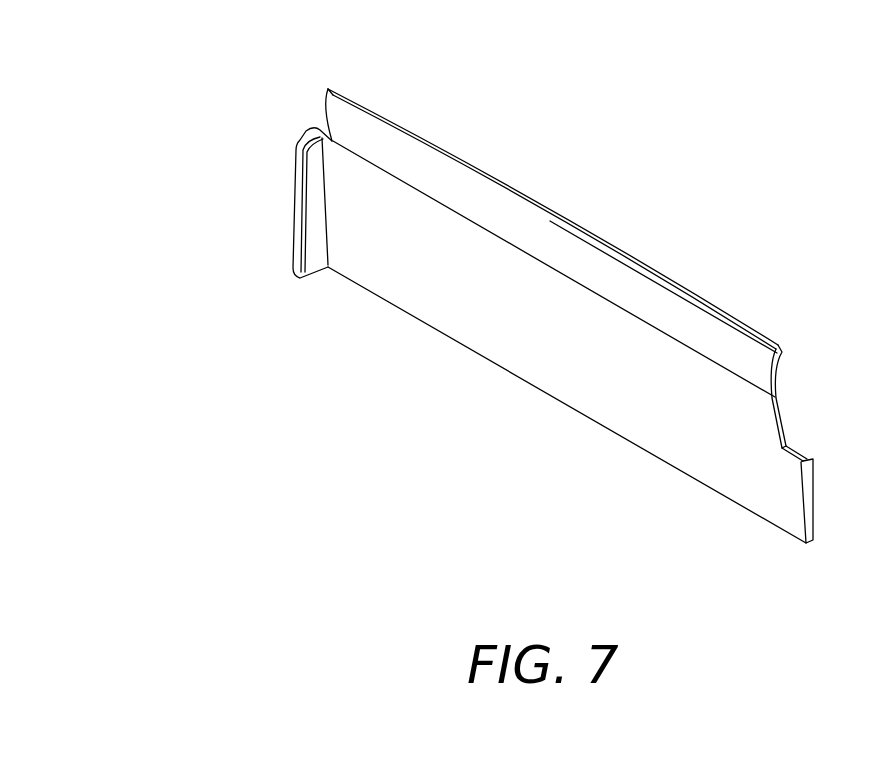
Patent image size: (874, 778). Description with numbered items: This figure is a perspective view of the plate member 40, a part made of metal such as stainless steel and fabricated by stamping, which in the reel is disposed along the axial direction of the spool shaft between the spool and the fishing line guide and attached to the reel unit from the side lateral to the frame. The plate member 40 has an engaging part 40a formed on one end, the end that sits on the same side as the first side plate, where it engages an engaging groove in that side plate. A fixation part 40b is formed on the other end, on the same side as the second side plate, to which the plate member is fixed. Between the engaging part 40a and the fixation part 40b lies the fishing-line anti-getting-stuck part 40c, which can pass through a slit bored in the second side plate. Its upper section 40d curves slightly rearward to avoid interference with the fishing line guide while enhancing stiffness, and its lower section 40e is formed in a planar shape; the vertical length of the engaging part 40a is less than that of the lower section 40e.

The plate member 40 is at (498, 294).
The engaging part 40a is at (790, 502).
The fixation part 40b is at (300, 187).
The fishing-line anti-getting-stuck part 40c is at (480, 293).
The upper section 40d is at (580, 262).
The lower section 40e is at (521, 193).